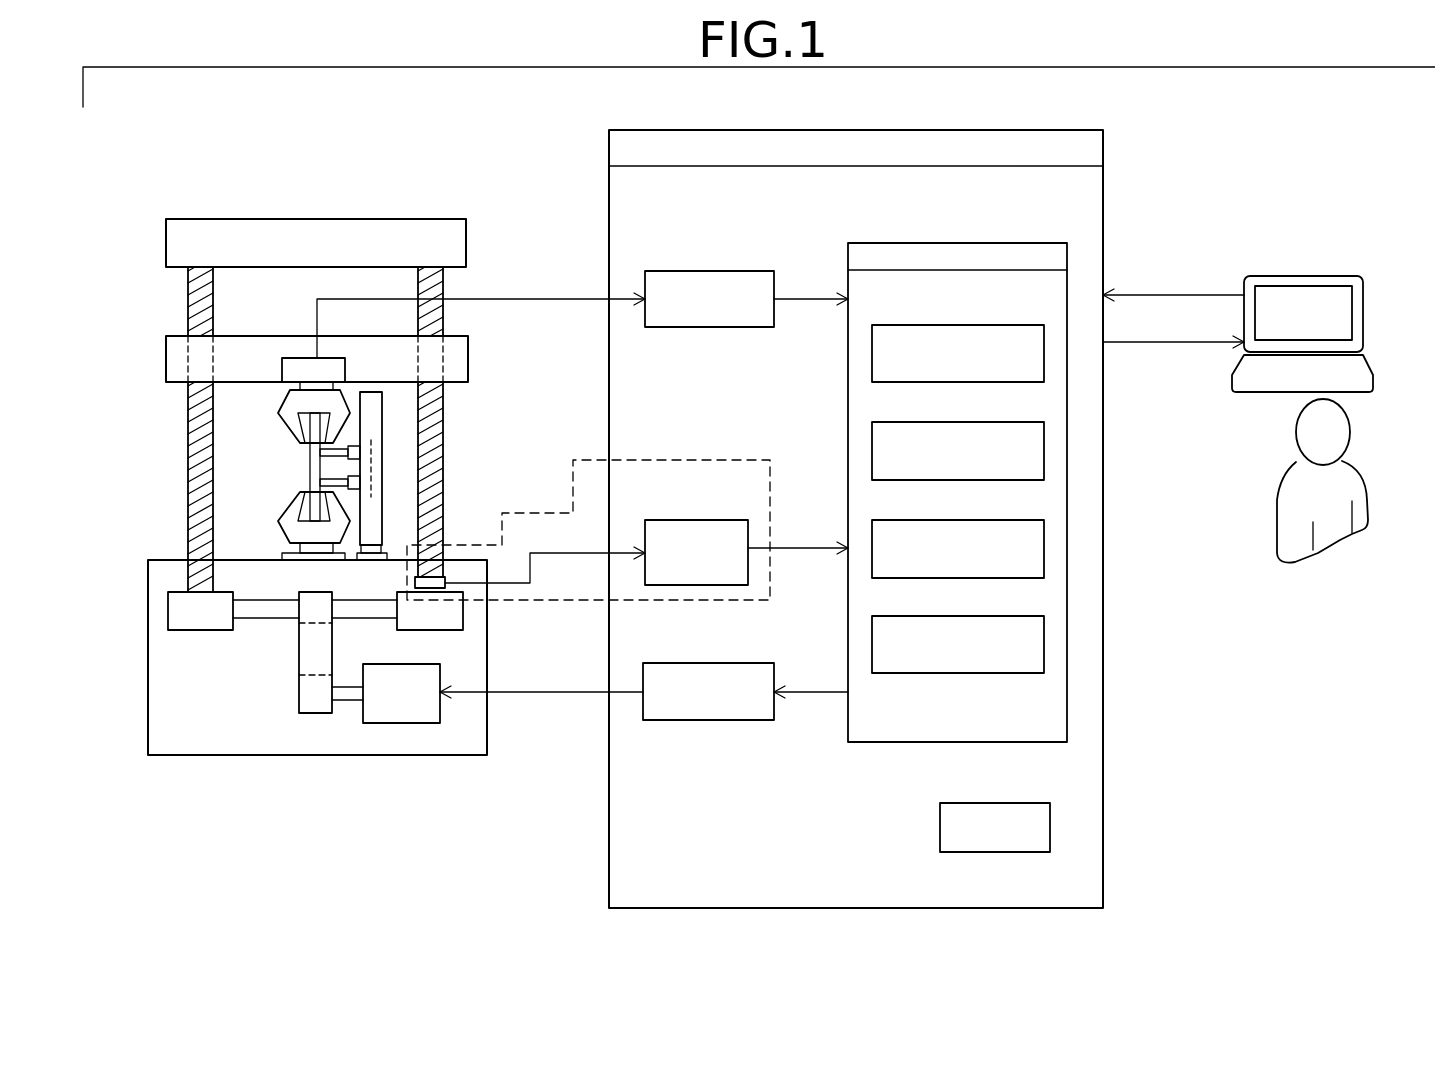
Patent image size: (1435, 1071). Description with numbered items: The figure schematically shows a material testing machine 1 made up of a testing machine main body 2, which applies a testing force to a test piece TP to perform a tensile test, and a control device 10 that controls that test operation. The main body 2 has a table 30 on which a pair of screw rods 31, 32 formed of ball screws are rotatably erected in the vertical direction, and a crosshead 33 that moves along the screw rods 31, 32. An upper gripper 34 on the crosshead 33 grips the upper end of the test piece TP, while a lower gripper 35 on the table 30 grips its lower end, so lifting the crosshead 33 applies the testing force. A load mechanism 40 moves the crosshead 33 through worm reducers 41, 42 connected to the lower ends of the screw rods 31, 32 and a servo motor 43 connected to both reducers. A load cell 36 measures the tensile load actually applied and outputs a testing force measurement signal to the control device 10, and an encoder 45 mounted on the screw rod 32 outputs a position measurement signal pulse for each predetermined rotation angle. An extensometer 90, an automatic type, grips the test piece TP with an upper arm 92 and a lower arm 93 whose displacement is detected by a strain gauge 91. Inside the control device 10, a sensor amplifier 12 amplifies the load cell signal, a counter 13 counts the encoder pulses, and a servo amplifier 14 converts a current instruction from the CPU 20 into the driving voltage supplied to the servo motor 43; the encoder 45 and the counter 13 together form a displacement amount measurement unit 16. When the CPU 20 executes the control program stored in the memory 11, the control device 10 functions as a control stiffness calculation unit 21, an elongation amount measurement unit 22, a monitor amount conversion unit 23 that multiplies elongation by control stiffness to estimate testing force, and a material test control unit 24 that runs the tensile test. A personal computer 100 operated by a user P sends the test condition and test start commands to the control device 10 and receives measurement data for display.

The material testing machine 1 is at (470, 124).
The testing machine main body 2 is at (306, 219).
The control device 10 is at (858, 130).
The memory 11 is at (988, 803).
The sensor amplifier 12 is at (707, 271).
The counter 13 is at (697, 520).
The servo amplifier 14 is at (700, 663).
The displacement amount measurement unit 16 is at (660, 460).
The central processing unit 20 is at (955, 243).
The control stiffness calculation unit 21 is at (948, 325).
The elongation amount measurement unit 22 is at (948, 422).
The monitor amount conversion unit 23 is at (948, 520).
The material test control unit 24 is at (948, 616).
The table 30 is at (210, 757).
The screw rod 31 is at (188, 483).
The screw rod 32 is at (443, 425).
The crosshead 33 is at (172, 360).
The upper gripper 34 is at (285, 420).
The lower gripper 35 is at (283, 512).
The load cell 36 is at (295, 358).
The load mechanism 40 is at (266, 709).
The worm reducer 41 is at (168, 605).
The worm reducer 42 is at (463, 613).
The servo motor 43 is at (373, 723).
The encoder 45 is at (445, 582).
The extensometer 90 is at (383, 538).
The strain gauge 91 is at (378, 468).
The upper arm 92 is at (310, 455).
The lower arm 93 is at (310, 481).
The personal computer 100 is at (1292, 276).
The test piece TP is at (310, 468).
The user P is at (1345, 440).